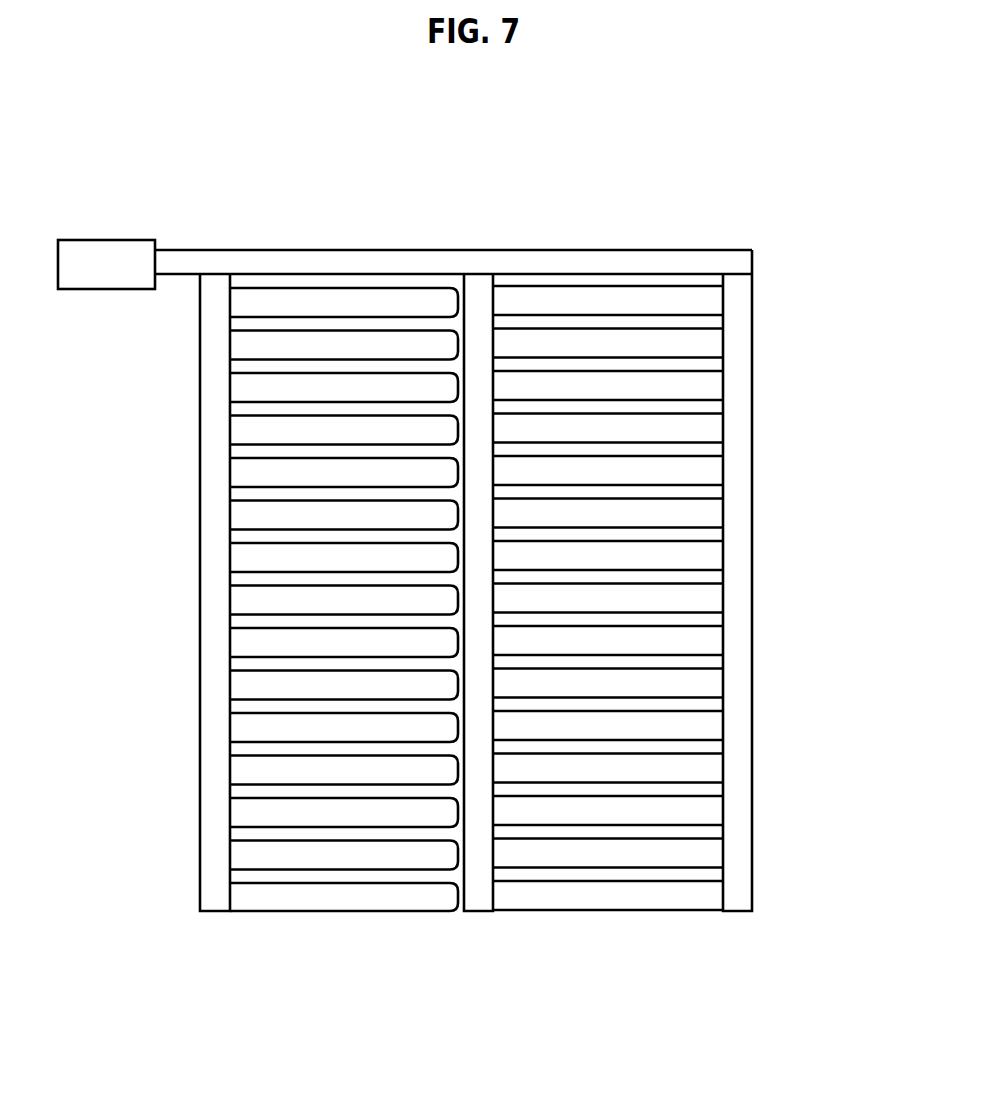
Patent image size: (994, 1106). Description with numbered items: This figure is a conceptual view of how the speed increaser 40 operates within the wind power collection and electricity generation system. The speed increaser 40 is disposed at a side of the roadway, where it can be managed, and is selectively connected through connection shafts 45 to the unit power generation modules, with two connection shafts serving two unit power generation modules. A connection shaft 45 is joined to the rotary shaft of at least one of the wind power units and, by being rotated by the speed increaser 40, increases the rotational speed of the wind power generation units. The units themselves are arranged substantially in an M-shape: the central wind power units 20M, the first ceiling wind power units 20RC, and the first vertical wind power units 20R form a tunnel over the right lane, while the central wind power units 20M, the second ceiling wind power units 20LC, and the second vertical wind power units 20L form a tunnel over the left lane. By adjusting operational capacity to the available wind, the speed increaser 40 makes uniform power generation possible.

The speed increaser 40 is at (85, 267).
The connection shaft 45 is at (421, 250).
The second vertical wind power unit 20L is at (214, 896).
The central wind power unit 20M is at (473, 893).
The first vertical wind power unit 20R is at (745, 895).
The second ceiling wind power unit 20LC is at (350, 900).
The first ceiling wind power unit 20RC is at (647, 893).